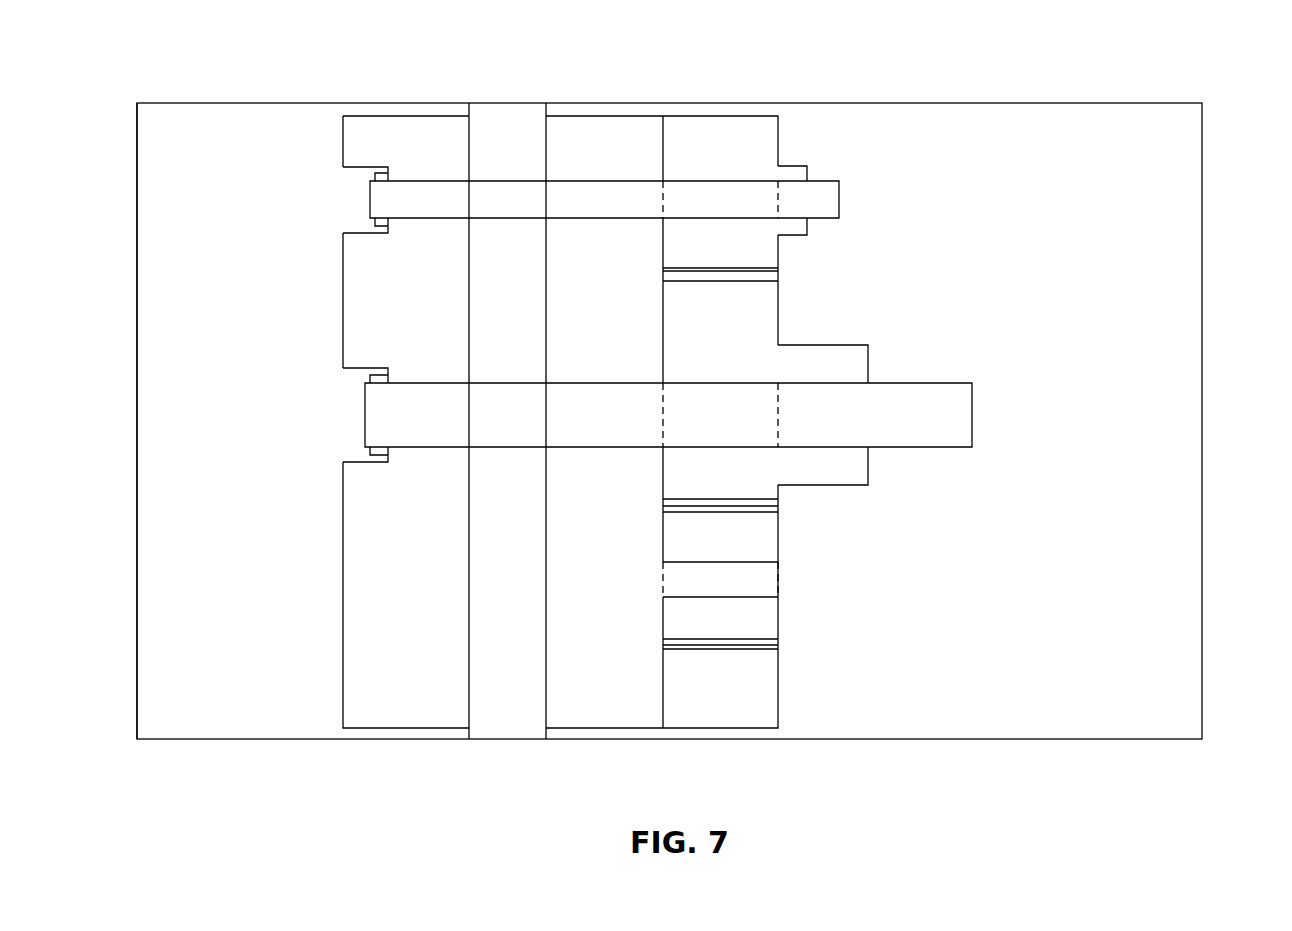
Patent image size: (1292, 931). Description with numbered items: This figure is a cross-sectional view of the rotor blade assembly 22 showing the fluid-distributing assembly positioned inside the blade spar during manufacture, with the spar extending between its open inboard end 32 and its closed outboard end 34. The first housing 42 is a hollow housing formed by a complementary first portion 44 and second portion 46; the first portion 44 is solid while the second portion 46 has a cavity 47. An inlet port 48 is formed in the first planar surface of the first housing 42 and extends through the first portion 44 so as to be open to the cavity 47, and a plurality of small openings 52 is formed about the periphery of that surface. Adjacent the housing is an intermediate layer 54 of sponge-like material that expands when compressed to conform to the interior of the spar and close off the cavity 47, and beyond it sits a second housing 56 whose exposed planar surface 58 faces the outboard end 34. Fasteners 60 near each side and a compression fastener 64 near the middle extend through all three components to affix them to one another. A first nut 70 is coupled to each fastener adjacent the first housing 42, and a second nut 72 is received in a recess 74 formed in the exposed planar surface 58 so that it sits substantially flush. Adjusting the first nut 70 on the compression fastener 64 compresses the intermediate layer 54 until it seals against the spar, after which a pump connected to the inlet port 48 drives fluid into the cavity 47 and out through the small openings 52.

The rotor blade assembly 22 is at (972, 66).
The inboard end 32 is at (1200, 286).
The outboard end 34 is at (137, 330).
The first housing 42 is at (663, 112).
The first portion 44 is at (720, 116).
The second portion 46 is at (591, 115).
The cavity 47 is at (615, 695).
The inlet port 48 is at (765, 580).
The small openings 52 is at (772, 276).
The intermediate layer 54 is at (520, 705).
The second housing 56 is at (407, 715).
The exposed planar surface 58 is at (343, 278).
The fastener 60 is at (822, 200).
The compression fastener 64 is at (960, 412).
The first nut 70 is at (795, 172).
The second nut 72 is at (375, 177).
The recess 74 is at (348, 203).